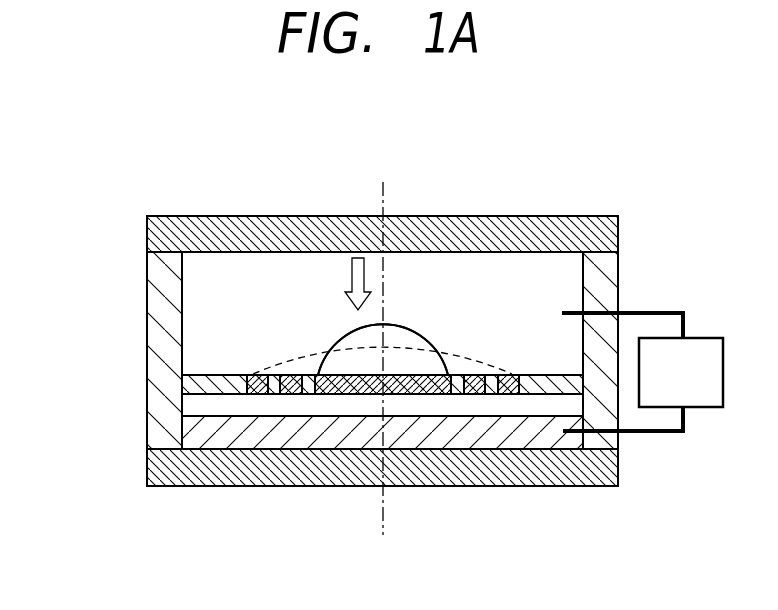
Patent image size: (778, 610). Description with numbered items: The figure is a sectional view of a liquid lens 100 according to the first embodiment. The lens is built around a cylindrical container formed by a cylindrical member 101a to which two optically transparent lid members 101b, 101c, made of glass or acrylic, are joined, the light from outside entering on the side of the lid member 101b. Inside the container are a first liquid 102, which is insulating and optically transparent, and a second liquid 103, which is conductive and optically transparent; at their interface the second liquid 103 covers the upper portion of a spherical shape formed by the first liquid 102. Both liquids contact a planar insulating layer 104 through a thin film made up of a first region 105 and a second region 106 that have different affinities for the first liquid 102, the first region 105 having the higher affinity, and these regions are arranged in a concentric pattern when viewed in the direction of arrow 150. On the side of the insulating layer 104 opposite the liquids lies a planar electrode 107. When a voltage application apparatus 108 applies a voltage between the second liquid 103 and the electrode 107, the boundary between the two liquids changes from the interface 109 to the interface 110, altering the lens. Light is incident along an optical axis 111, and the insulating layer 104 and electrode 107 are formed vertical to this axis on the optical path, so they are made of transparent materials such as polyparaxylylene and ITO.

The liquid lens 100 is at (88, 130).
The cylindrical member 101a is at (157, 270).
The lid member 101b is at (180, 216).
The lid member 101c is at (183, 477).
The first liquid 102 is at (346, 336).
The second liquid 103 is at (212, 352).
The insulating layer 104 is at (190, 402).
The first region 105 is at (252, 394).
The second region 106 is at (272, 395).
The electrode 107 is at (340, 440).
The voltage application apparatus 108 is at (703, 338).
The interface 109 is at (472, 355).
The interface 110 is at (408, 325).
The optical axis 111 is at (383, 195).
The arrow 150 is at (335, 284).